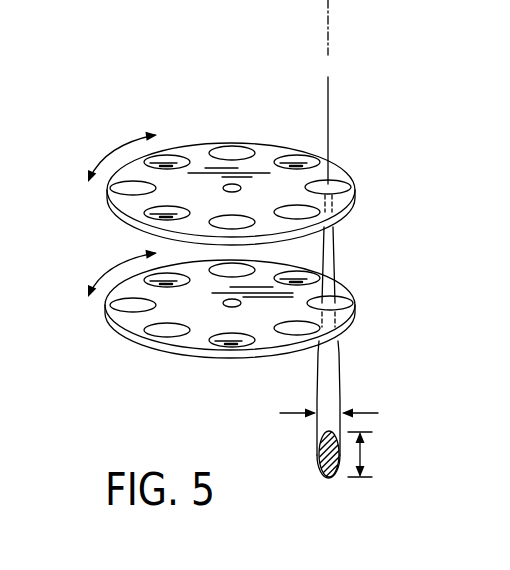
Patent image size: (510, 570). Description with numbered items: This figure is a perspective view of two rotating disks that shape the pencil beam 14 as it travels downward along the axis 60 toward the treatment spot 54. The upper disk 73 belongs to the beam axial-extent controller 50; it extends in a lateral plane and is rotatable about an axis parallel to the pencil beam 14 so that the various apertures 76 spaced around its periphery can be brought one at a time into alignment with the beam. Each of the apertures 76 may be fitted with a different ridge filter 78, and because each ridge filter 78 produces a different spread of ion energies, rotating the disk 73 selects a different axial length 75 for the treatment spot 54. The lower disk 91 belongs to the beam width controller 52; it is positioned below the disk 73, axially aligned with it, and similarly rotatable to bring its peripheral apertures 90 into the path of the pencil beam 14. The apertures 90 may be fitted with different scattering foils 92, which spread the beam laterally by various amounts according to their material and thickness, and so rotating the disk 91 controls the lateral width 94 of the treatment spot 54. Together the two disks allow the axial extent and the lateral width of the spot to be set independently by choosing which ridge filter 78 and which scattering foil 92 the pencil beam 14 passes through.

The axis 60 is at (326, 26).
The pencil beam 14 is at (330, 112).
The lateral width 94 is at (329, 406).
The treatment spot 54 is at (324, 468).
The axial length 75 is at (361, 458).
The beam axial-extent controller 50 is at (375, 140).
The disk 73 is at (110, 207).
The ridge filter 78 is at (220, 152).
The apertures 76 is at (187, 153).
The beam width controller 52 is at (358, 262).
The disk 91 is at (105, 318).
The scattering foils 92 is at (132, 310).
The apertures 90 is at (297, 335).